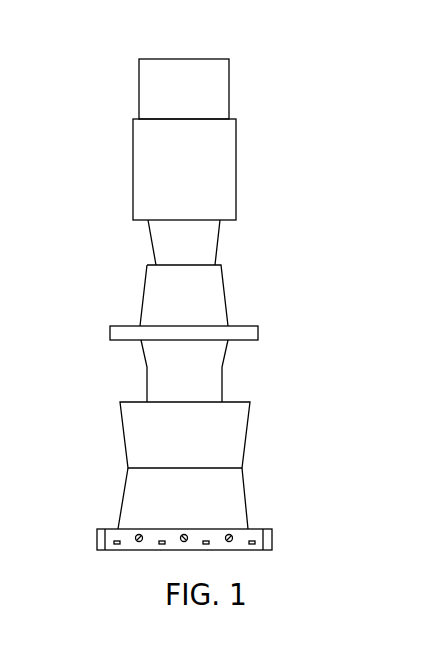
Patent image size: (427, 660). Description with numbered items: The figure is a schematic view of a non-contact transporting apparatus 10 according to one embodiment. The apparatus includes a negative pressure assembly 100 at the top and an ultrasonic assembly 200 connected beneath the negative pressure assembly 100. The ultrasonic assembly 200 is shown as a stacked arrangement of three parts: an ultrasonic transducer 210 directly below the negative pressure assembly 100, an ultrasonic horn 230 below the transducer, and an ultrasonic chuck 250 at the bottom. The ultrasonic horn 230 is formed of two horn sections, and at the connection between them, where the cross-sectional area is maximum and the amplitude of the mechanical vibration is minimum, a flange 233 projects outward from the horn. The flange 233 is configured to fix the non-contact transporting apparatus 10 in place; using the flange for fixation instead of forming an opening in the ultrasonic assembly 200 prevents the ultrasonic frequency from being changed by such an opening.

The non-contact transporting apparatus 10 is at (96, 54).
The negative pressure assembly 100 is at (202, 93).
The ultrasonic assembly 200 is at (204, 334).
The ultrasonic transducer 210 is at (205, 197).
The ultrasonic horn 230 is at (203, 308).
The flange 233 is at (133, 340).
The ultrasonic chuck 250 is at (211, 476).